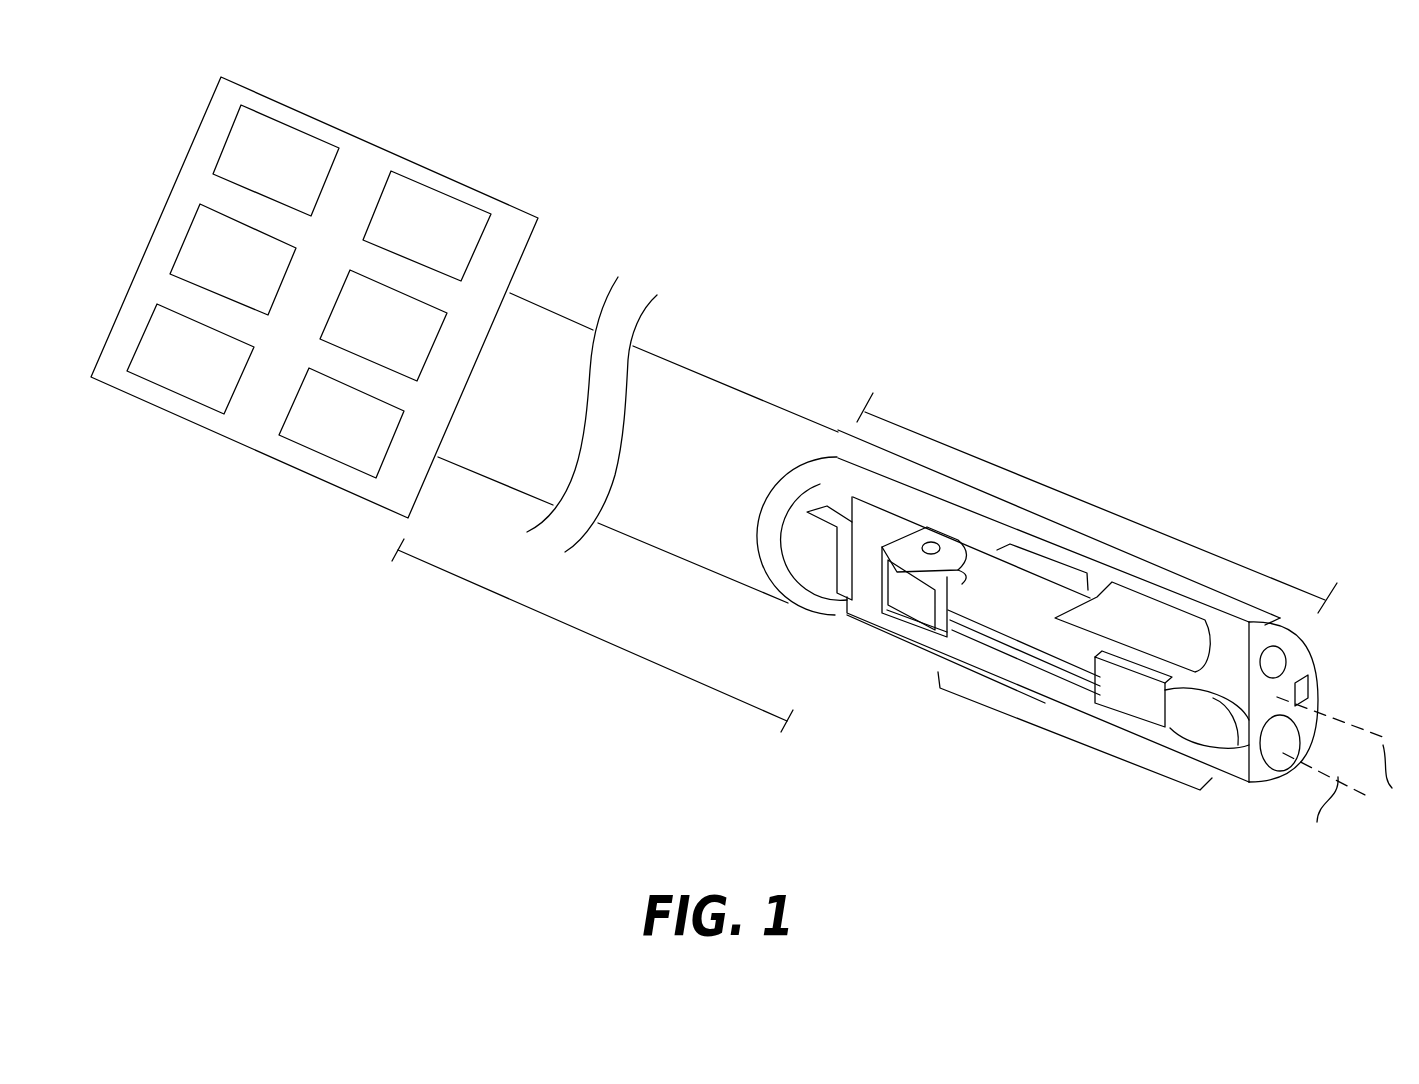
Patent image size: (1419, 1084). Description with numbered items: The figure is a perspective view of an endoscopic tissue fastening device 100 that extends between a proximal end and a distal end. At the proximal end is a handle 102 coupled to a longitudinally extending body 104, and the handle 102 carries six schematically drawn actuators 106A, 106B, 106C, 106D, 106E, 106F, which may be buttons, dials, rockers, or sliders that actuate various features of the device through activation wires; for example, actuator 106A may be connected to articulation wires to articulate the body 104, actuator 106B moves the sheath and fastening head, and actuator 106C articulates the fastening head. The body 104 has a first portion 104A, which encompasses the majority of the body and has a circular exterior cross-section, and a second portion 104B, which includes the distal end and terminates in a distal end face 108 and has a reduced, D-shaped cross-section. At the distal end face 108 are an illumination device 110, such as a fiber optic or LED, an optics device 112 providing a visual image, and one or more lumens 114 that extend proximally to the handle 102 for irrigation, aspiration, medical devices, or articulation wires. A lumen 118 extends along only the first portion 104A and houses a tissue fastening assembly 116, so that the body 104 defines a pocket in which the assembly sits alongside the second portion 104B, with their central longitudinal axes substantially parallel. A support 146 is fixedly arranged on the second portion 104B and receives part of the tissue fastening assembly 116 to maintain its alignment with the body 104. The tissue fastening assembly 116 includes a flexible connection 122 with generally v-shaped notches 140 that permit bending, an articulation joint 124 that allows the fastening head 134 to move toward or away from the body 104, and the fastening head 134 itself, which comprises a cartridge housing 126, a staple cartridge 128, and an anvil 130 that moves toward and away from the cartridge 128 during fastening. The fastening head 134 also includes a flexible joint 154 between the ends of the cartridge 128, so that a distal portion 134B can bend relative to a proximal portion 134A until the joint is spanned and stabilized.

The endoscopic tissue fastening device 100 is at (962, 148).
The handle 102 is at (314, 289).
The body 104 is at (947, 313).
The first portion 104A is at (575, 630).
The second portion 104B is at (1077, 497).
The actuator 106A is at (276, 160).
The actuator 106B is at (233, 259).
The actuator 106C is at (190, 359).
The actuator 106D is at (427, 226).
The actuator 106E is at (383, 325).
The actuator 106F is at (341, 423).
The distal end face 108 is at (1273, 637).
The illumination device 110 is at (1283, 660).
The optics device 112 is at (1308, 690).
The lumens 114 is at (1285, 747).
The tissue fastening assembly 116 is at (998, 773).
The lumen 118 is at (843, 488).
The flexible connection 122 is at (830, 507).
The articulation joint 124 is at (893, 665).
The cartridge housing 126 is at (985, 655).
The cartridge 128 is at (1210, 740).
The anvil 130 is at (1182, 655).
The fastening head 134 is at (1090, 747).
The proximal portion 134A is at (1050, 557).
The distal portion 134B is at (1190, 617).
The notches 140 is at (859, 512).
The support 146 is at (1132, 695).
The flexible joint 154 is at (1040, 601).